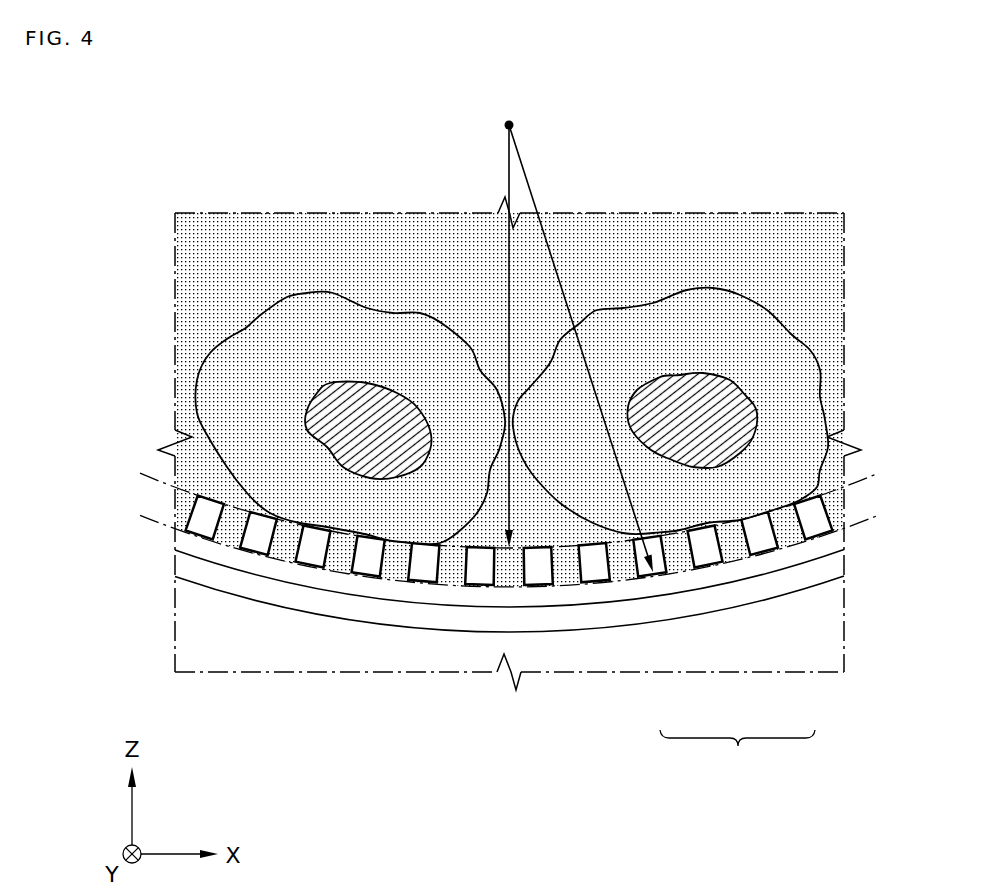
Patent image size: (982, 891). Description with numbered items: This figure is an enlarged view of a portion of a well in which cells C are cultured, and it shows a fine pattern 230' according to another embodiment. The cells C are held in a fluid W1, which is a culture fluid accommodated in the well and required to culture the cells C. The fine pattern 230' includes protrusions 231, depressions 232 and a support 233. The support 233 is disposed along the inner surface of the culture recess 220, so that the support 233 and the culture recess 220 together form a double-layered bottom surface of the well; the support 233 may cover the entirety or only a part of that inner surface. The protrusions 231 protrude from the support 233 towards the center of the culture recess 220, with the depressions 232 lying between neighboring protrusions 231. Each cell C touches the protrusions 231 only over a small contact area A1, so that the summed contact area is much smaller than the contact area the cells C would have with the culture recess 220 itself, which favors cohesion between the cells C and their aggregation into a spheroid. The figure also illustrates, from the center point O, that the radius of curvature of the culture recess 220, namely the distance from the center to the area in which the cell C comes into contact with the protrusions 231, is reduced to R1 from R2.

The fluid W1 is at (229, 262).
The center point O is at (499, 113).
The reduced radius of curvature R1 is at (491, 336).
The radius of curvature of the culture recess R2 is at (581, 348).
The cell C is at (760, 356).
The area of contact surface A1 is at (483, 548).
The culture recess 220 is at (594, 617).
The protrusion 231 is at (763, 535).
The depression 232 is at (735, 542).
The support 233 is at (683, 580).
The fine pattern 230' is at (737, 750).